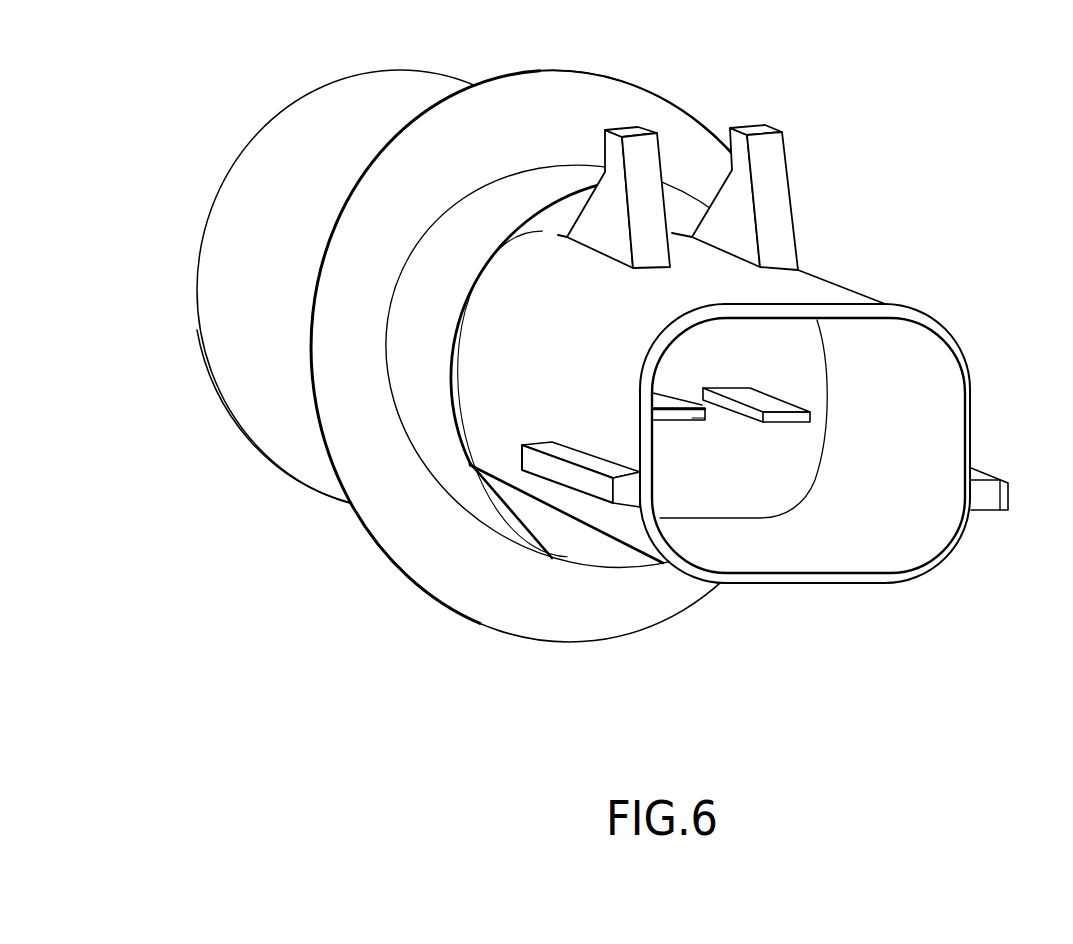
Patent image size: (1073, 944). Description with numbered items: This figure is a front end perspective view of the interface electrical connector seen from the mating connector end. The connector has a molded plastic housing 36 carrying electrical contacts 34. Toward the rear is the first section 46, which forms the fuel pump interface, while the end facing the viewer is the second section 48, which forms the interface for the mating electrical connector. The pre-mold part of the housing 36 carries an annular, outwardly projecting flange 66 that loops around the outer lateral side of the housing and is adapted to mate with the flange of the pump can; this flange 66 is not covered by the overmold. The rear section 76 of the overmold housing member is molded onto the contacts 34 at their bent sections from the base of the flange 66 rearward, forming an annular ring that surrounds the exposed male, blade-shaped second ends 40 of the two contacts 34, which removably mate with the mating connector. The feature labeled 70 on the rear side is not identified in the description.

The electrical contacts 34 is at (692, 422).
The housing 36 is at (443, 603).
The second end 40 is at (677, 417).
The first section 46 is at (218, 329).
The second section 48 is at (918, 315).
The flange 66 is at (587, 70).
The rear face of flange 70 is at (275, 437).
The rear section 76 is at (973, 393).